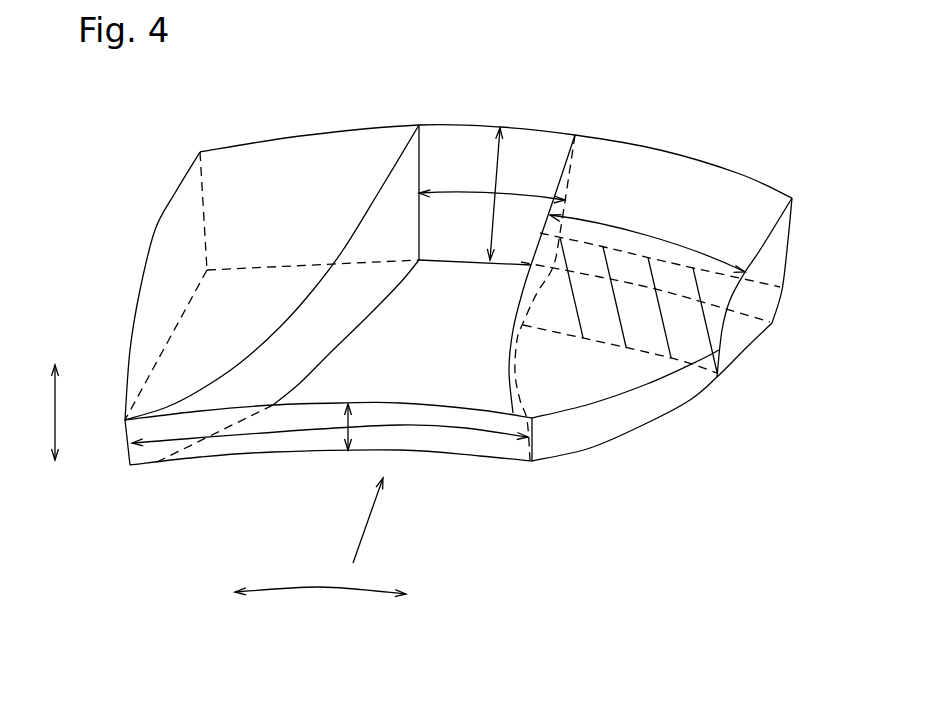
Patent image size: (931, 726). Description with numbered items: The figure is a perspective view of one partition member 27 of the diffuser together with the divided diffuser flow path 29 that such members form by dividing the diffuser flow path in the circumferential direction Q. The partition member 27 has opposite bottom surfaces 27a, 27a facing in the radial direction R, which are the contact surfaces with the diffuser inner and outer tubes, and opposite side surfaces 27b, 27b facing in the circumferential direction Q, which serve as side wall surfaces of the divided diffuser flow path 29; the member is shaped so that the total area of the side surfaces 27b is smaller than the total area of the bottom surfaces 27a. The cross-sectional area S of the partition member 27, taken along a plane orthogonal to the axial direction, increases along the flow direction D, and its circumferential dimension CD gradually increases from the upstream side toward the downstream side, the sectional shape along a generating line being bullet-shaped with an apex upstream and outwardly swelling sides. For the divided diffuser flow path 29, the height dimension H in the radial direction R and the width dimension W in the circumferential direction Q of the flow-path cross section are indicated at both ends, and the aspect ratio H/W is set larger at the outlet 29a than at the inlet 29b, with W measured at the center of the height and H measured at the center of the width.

The partition member 27 is at (255, 143).
The bottom surface 27a is at (640, 207).
The side surface 27b is at (533, 282).
The divided diffuser flow path 29 is at (470, 356).
The outlet 29a is at (438, 160).
The inlet 29b is at (487, 447).
The cross-sectional area S is at (655, 315).
The circumferential dimension CD is at (690, 247).
The height dimension H is at (493, 167).
The width dimension W is at (453, 197).
The radial direction R is at (57, 410).
The flow direction D is at (365, 528).
The circumferential direction Q is at (317, 595).